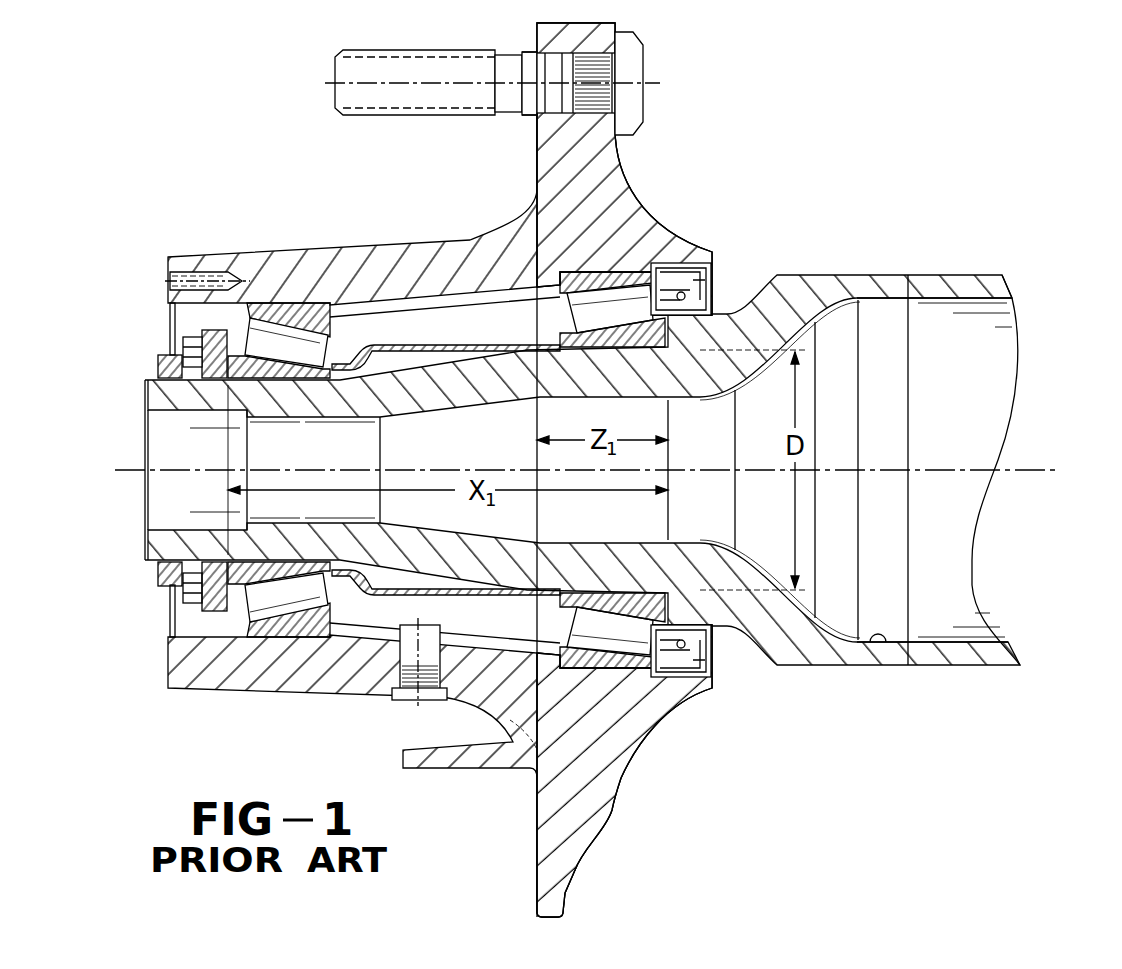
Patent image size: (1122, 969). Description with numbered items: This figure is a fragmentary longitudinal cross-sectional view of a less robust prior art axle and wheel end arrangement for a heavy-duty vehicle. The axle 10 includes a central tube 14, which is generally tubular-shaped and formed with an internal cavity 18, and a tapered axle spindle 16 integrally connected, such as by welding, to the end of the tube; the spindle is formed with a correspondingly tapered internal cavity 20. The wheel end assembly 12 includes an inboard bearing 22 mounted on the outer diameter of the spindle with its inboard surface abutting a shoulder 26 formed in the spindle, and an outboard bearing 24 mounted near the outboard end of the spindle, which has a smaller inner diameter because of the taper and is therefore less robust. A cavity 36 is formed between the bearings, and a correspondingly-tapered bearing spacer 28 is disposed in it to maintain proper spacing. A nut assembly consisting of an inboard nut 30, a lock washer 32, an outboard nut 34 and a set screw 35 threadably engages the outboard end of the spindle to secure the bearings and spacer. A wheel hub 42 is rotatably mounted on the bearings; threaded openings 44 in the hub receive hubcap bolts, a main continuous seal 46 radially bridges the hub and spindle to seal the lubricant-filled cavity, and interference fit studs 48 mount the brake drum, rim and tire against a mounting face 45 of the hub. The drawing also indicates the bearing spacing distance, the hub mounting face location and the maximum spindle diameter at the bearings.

The axle 10 is at (980, 275).
The wheel end assembly 12 is at (632, 174).
The central tube 14 is at (975, 665).
The axle spindle 16 is at (146, 545).
The internal cavity 18 is at (962, 642).
The tapered internal cavity 20 is at (876, 650).
The inboard bearing 22 is at (608, 660).
The outboard bearing 24 is at (290, 632).
The shoulder 26 is at (653, 605).
The bearing spacer 28 is at (402, 343).
The inboard nut 30 is at (208, 332).
The lock washer 32 is at (203, 612).
The outboard nut 34 is at (183, 590).
The set screw 35 is at (178, 347).
The cavity 36 is at (487, 297).
The wheel hub 42 is at (290, 252).
The threaded openings 44 is at (185, 283).
The mounting face 45 is at (538, 133).
The main continuous seal 46 is at (712, 285).
The interference fit studs 48 is at (395, 50).